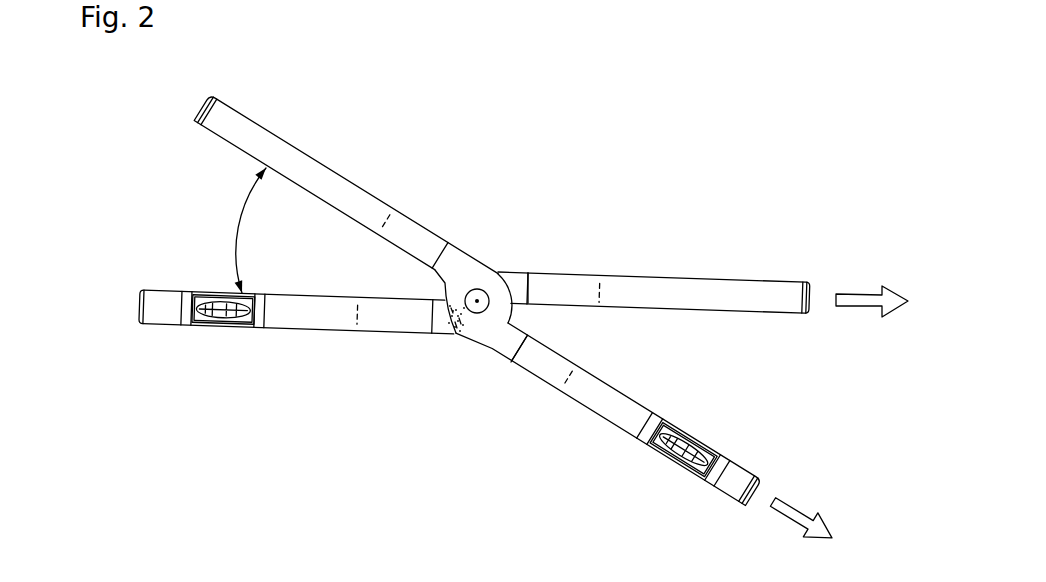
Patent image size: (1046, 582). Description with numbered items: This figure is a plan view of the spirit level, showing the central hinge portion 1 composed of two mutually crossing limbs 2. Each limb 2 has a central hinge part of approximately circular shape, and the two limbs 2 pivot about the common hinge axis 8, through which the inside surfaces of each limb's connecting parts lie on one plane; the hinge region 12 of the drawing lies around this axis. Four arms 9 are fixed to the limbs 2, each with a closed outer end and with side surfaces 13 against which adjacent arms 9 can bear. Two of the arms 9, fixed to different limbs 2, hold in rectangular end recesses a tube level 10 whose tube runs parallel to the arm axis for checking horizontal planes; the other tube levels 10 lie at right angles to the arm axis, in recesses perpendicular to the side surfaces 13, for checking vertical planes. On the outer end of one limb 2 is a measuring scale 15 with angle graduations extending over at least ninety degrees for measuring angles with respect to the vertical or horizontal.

The central hinge portion 1 is at (478, 272).
The limb 2 is at (524, 300).
The hinge axis 8 is at (477, 304).
The arm 9 is at (300, 170).
The tube level 10 is at (218, 293).
The pivot body 12 is at (467, 285).
The side surface 13 is at (352, 222).
The measuring scale 15 is at (449, 337).